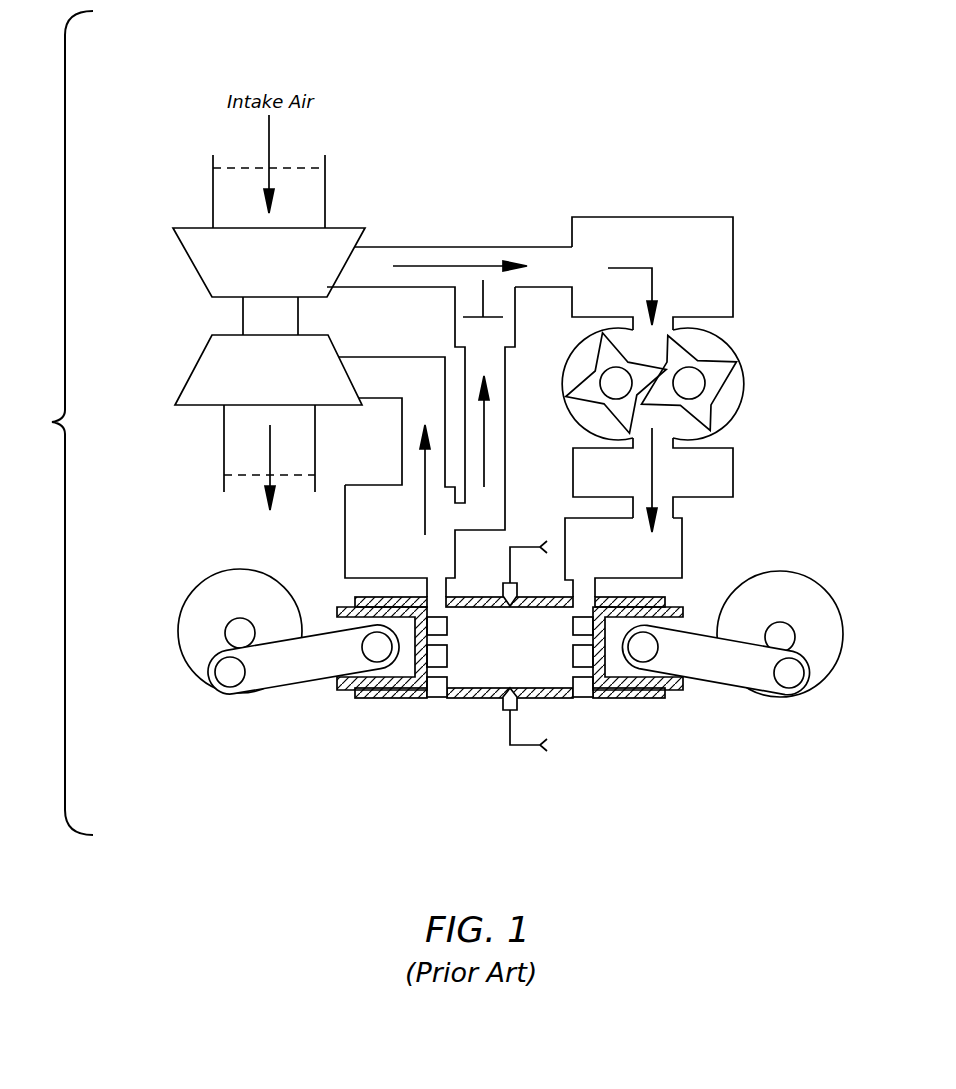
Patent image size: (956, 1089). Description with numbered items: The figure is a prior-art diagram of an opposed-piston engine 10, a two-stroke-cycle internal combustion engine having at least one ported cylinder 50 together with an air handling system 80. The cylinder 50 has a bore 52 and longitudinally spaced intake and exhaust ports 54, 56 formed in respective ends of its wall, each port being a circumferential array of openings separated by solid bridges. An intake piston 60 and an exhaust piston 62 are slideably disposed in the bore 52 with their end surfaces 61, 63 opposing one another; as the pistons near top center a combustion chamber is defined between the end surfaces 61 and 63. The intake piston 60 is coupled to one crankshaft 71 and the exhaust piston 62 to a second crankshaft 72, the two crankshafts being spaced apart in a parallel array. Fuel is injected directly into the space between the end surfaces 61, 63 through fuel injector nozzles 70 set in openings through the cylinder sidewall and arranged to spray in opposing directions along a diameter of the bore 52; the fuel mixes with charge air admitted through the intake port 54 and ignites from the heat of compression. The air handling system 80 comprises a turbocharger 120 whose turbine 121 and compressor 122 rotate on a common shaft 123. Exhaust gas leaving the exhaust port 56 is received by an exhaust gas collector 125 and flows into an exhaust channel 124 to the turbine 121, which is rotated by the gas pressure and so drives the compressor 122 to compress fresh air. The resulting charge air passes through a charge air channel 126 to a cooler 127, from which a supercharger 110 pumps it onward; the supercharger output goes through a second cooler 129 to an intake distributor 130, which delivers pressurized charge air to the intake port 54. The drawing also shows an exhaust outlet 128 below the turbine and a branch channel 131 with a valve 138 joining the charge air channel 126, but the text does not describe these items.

The opposed-piston engine 10 is at (51, 423).
The air handling system 80 is at (537, 93).
The turbocharger 120 is at (188, 321).
The compressor 122 is at (193, 263).
The common shaft 123 is at (298, 314).
The turbine 121 is at (190, 378).
The exhaust outlet duct 128 is at (224, 462).
The charge air channel 126 is at (444, 247).
The bypass valve 138 is at (483, 297).
The bypass channel 131 is at (505, 418).
The exhaust channel 124 is at (402, 410).
The exhaust gas collector 125 is at (343, 543).
The cooler 127 is at (733, 278).
The supercharger 110 is at (725, 342).
The cooler 129 is at (733, 470).
The intake distributor 130 is at (682, 557).
The ported cylinder 50 is at (482, 666).
The bore 52 is at (524, 656).
The end surface 63 is at (430, 627).
The end surface 61 is at (590, 630).
The fuel injector nozzle 70 is at (505, 590).
The exhaust piston 62 is at (338, 687).
The intake piston 60 is at (672, 608).
The crankshaft 72 is at (180, 602).
The crankshaft 71 is at (822, 572).
The exhaust port 56 is at (437, 698).
The intake port 54 is at (583, 698).